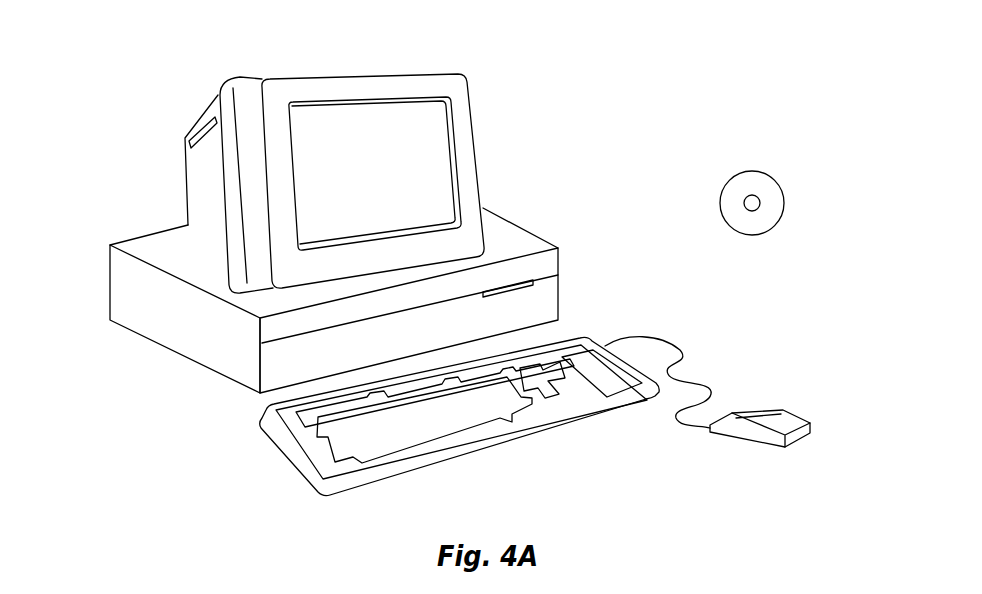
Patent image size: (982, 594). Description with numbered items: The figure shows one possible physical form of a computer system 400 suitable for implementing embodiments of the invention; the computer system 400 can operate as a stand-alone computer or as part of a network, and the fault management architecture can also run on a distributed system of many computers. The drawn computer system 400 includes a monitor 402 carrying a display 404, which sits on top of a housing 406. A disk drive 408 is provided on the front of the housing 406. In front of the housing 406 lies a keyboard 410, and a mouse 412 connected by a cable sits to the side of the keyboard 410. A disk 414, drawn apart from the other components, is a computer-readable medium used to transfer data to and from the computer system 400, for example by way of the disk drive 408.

The computer system 400 is at (676, 70).
The monitor 402 is at (372, 183).
The display screen 404 is at (438, 137).
The base unit / processing unit housing 406 is at (353, 292).
The disk drive slot 408 is at (535, 275).
The keyboard 410 is at (463, 453).
The mouse 412 is at (773, 402).
The compact disc / storage medium 414 is at (765, 176).